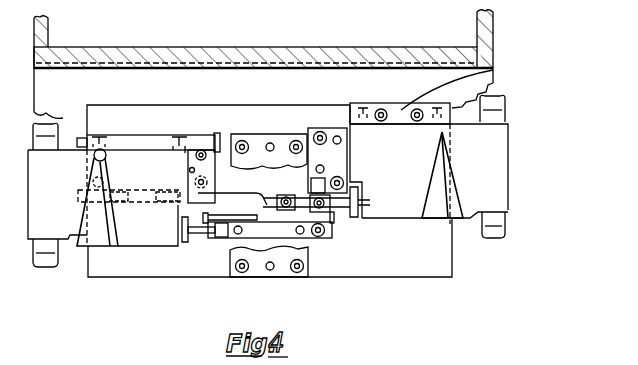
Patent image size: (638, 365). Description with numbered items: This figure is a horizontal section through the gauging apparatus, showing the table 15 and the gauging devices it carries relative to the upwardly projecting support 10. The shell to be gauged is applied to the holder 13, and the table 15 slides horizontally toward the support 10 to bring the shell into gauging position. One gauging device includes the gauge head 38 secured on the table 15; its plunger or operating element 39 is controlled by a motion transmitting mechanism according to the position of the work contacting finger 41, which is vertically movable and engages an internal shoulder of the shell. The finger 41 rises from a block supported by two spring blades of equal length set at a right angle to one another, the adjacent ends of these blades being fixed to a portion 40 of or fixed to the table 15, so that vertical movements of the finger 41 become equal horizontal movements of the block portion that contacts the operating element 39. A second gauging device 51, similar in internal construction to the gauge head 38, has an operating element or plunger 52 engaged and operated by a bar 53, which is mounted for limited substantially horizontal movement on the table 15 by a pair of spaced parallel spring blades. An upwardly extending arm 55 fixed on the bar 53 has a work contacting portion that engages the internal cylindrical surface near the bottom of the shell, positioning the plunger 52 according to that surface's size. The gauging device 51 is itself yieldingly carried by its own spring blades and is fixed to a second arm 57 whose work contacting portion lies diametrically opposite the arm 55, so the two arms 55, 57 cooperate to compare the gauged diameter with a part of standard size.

The support 10 is at (493, 29).
The holder 13 is at (495, 73).
The table 15 is at (428, 263).
The gauge head 38 is at (500, 153).
The plunger or operating element 39 is at (336, 206).
The portion of the table 40 is at (312, 175).
The work contacting finger 41 is at (273, 198).
The gauging device 51 is at (135, 238).
The operating element or plunger 52 is at (202, 235).
The bar 53 is at (240, 217).
The upwardly extending arm 55 is at (287, 213).
The second arm 57 is at (255, 217).